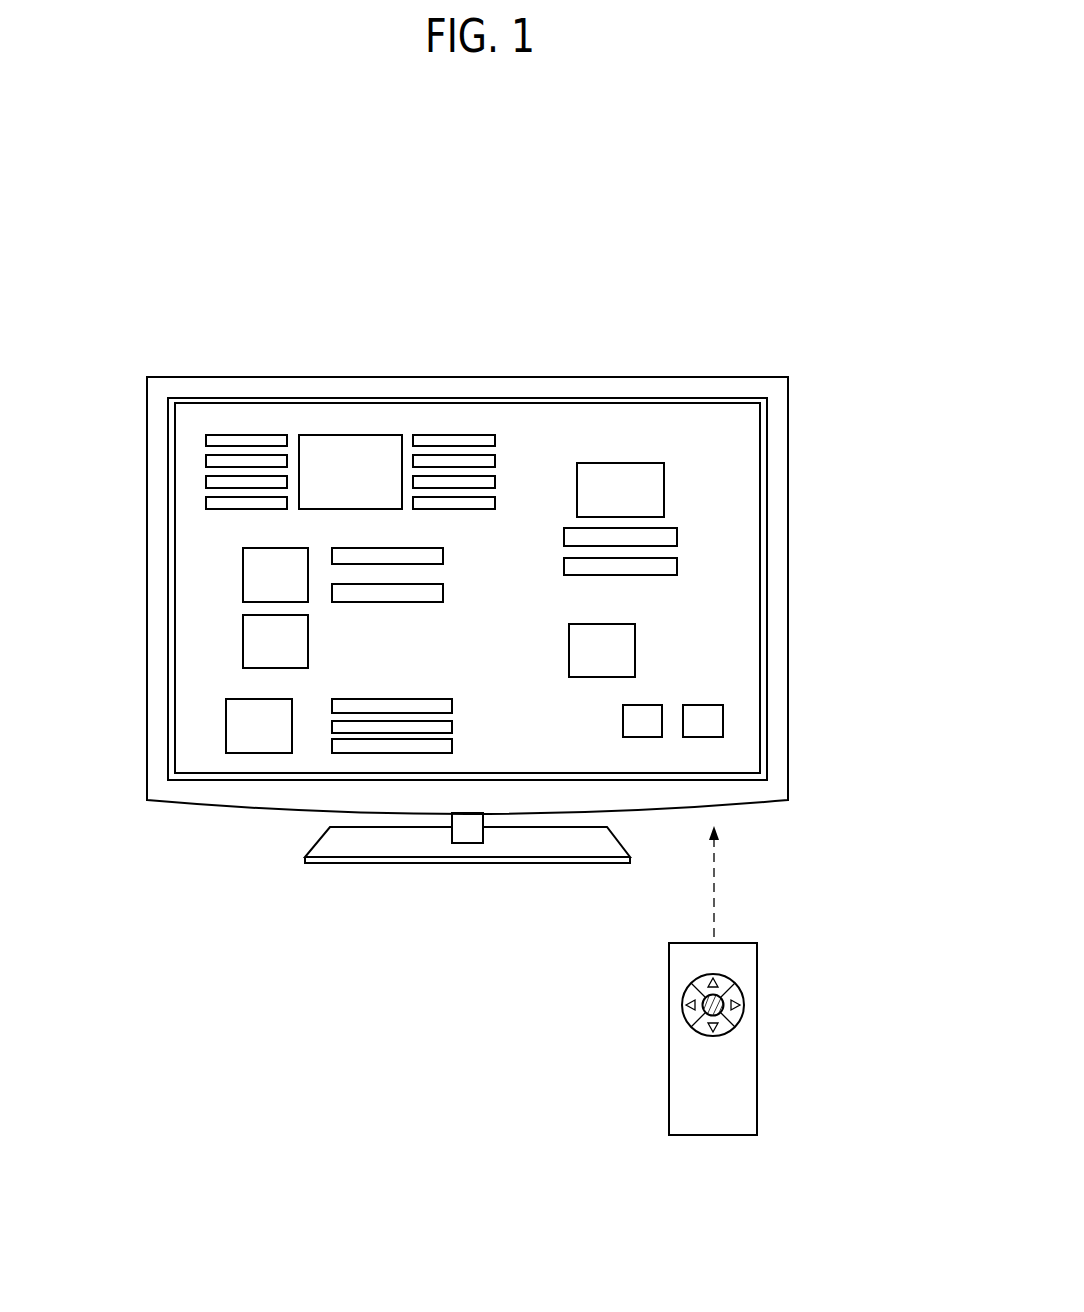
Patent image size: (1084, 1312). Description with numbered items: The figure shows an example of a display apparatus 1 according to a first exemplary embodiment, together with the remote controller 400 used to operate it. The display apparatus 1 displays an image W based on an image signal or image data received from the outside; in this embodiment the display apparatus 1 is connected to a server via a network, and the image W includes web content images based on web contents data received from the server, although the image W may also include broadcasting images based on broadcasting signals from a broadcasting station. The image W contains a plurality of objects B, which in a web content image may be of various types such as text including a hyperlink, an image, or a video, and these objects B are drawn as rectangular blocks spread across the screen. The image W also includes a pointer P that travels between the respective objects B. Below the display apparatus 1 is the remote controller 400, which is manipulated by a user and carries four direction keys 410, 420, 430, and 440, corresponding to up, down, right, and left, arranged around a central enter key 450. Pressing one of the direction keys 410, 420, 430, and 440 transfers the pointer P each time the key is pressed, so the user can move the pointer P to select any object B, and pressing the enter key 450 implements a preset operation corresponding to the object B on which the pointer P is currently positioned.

The display apparatus 1 is at (822, 364).
The image W is at (743, 609).
The objects B is at (300, 497).
The pointer P is at (236, 590).
The remote controller 400 is at (682, 958).
The direction key 410 is at (719, 980).
The direction key 420 is at (720, 1028).
The direction key 430 is at (690, 1006).
The direction key 440 is at (737, 1005).
The enter key 450 is at (723, 1012).